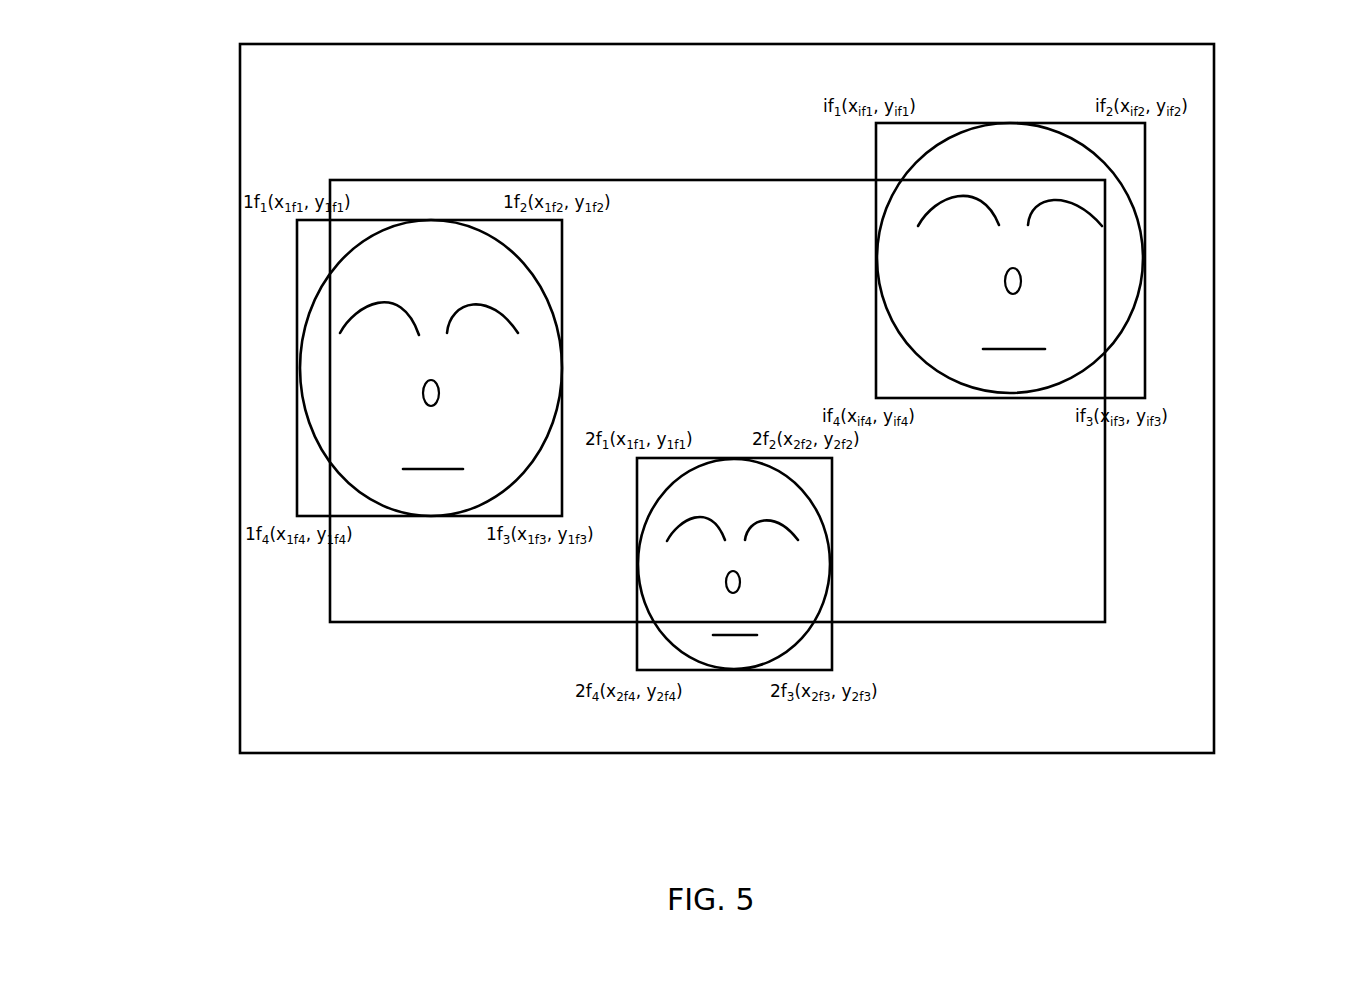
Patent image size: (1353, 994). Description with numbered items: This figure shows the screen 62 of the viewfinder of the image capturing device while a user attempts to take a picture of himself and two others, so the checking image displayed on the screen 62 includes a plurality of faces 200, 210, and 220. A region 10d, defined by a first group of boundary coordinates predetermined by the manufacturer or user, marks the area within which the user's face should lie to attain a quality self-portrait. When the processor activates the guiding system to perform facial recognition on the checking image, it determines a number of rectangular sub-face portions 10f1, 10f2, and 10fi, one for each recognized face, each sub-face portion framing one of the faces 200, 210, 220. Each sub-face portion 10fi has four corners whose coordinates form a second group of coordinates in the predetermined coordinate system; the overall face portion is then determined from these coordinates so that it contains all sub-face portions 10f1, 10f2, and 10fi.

The screen 62 is at (1214, 658).
The region 10d is at (1105, 570).
The first sub-face portion 10f1 is at (335, 288).
The second sub-face portion 10f2 is at (724, 588).
The i-th sub-face portion 10fi is at (1096, 260).
The face 200 is at (315, 392).
The face 210 is at (805, 580).
The face 220 is at (1115, 263).